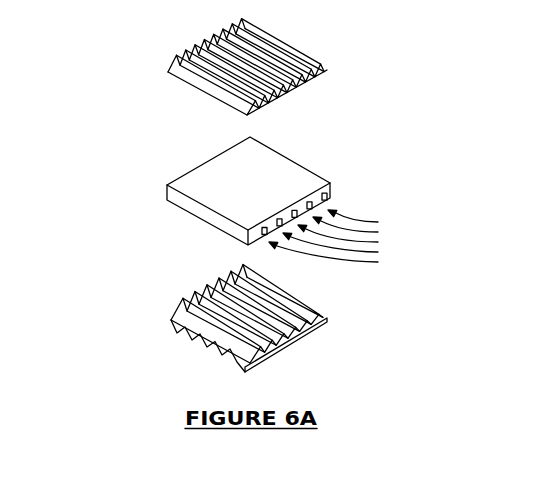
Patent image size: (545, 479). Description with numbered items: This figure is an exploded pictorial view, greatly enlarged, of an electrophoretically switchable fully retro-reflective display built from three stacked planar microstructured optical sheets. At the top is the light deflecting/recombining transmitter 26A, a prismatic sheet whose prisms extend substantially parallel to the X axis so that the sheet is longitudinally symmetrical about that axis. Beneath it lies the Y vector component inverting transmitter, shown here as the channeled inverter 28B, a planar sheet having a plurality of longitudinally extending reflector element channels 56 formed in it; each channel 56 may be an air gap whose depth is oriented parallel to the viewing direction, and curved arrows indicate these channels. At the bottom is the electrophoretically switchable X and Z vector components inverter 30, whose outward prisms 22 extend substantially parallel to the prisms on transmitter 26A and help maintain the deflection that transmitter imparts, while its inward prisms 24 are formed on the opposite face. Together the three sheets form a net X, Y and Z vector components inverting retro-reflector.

The light deflecting/recombining transmitter 26A is at (354, 69).
The channeled inverter 28B is at (357, 189).
The reflector element channels 56 is at (380, 213).
The X and Z vector components inverter 30 is at (300, 317).
The outward prisms 22 is at (208, 284).
The inward prisms 24 is at (177, 333).